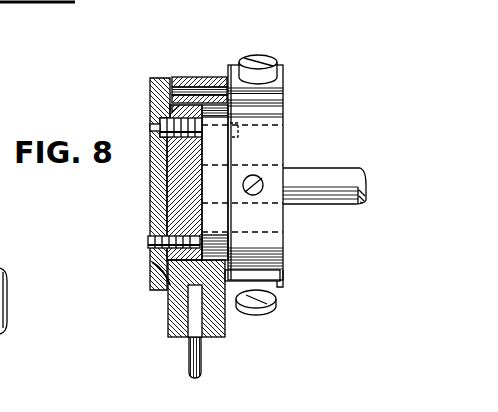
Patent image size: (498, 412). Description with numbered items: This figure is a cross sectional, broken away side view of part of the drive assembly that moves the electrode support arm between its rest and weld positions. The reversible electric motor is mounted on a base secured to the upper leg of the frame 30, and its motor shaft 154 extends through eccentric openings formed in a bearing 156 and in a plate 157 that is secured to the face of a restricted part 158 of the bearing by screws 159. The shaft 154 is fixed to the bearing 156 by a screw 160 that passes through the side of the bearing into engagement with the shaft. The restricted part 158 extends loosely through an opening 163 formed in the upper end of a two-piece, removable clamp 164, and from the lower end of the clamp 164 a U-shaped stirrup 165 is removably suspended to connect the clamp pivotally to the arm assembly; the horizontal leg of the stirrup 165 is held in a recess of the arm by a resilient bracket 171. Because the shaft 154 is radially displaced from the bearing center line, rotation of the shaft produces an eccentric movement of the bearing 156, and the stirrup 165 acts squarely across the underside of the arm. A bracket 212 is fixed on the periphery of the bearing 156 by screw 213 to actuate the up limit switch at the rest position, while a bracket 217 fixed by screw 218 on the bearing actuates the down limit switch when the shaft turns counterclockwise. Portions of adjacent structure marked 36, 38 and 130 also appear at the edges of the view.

The motor shaft 154 is at (333, 168).
The bearing 156 is at (283, 250).
The plate 157 is at (150, 182).
The restricted part 158 is at (175, 207).
The screws 159 is at (150, 133).
The screw 160 is at (262, 178).
The opening 163 is at (152, 277).
The two-piece removable clamp 164 is at (166, 318).
The U-shaped stirrup 165 is at (188, 363).
The resilient bracket 171 is at (40, 3).
The bracket 212 is at (284, 80).
The screw 213 is at (280, 53).
The bracket 217 is at (283, 282).
The screw 218 is at (290, 303).
The frame 30 is at (0, 368).
The frame member 36 is at (5, 312).
The opening 38 is at (14, 327).
The carriage 130 is at (281, 408).